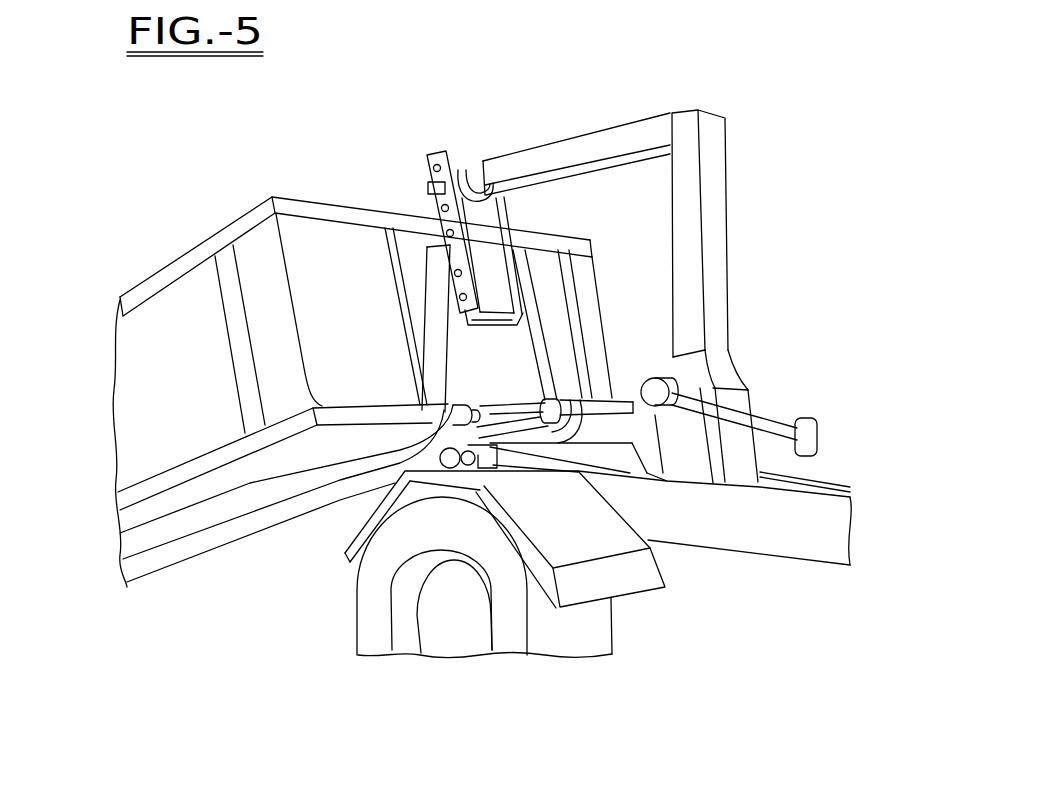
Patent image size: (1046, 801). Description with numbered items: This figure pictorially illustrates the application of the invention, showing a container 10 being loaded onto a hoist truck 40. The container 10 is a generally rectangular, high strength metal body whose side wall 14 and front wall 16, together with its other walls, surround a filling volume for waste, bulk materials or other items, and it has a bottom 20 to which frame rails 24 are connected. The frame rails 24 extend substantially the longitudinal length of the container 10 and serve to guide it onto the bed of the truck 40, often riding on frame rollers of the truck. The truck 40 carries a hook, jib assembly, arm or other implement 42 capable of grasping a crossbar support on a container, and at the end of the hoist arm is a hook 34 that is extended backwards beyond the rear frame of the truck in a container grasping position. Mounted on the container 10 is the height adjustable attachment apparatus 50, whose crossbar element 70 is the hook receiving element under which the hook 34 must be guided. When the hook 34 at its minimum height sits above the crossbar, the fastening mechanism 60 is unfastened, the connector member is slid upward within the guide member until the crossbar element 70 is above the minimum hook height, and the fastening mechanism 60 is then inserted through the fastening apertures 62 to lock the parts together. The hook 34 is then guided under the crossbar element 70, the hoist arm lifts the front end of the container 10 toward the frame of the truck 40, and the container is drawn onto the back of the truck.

The container 10 is at (233, 203).
The side wall 14 is at (157, 377).
The front wall 16 is at (330, 247).
The bottom 20 is at (153, 507).
The frame rails 24 is at (242, 503).
The hook 34 is at (466, 170).
The truck 40 is at (741, 560).
The jib assembly 42 is at (742, 245).
The height adjustable attachment apparatus 50 is at (430, 135).
The fastening mechanism 60 is at (440, 208).
The fastening apertures 62 is at (459, 297).
The crossbar element 70 is at (427, 184).